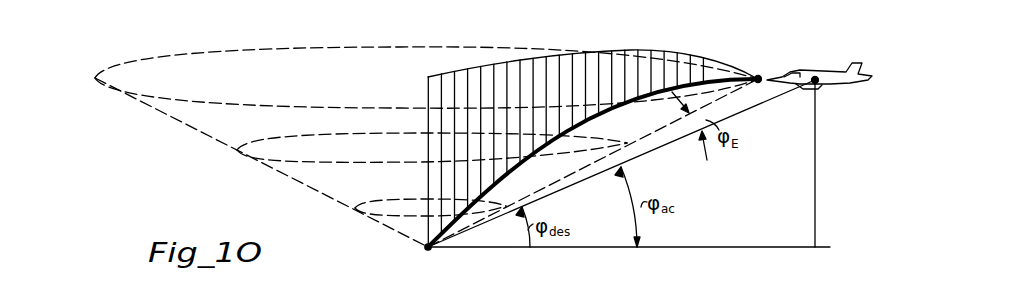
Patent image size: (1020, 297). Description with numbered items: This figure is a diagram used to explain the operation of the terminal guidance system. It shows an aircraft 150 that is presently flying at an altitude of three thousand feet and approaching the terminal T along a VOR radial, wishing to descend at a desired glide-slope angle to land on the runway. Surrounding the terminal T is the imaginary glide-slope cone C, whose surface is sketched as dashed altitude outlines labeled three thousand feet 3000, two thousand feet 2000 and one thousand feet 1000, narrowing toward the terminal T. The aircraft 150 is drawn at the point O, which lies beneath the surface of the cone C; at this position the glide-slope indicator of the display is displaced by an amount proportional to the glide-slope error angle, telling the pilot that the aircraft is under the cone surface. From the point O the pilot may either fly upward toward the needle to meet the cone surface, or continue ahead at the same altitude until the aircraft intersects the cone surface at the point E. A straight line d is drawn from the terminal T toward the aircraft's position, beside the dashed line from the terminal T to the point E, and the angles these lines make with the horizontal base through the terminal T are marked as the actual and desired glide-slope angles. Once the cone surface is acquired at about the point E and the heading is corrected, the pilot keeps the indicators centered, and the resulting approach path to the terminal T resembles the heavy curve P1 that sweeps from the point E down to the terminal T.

The aircraft 150 is at (830, 85).
The imaginary glide-slope cone C is at (332, 50).
The point of intersection with cone surface E is at (760, 77).
The point O (aircraft position beneath cone) O is at (816, 78).
The terminal T is at (426, 248).
The approach path line P1 is at (610, 113).
The distance line from target to aircraft d is at (685, 143).
The 3,000-foot altitude 3000 is at (397, 157).
The 2000 ft altitude envelope 2000 is at (401, 148).
The 1000 ft altitude envelope 1000 is at (400, 212).